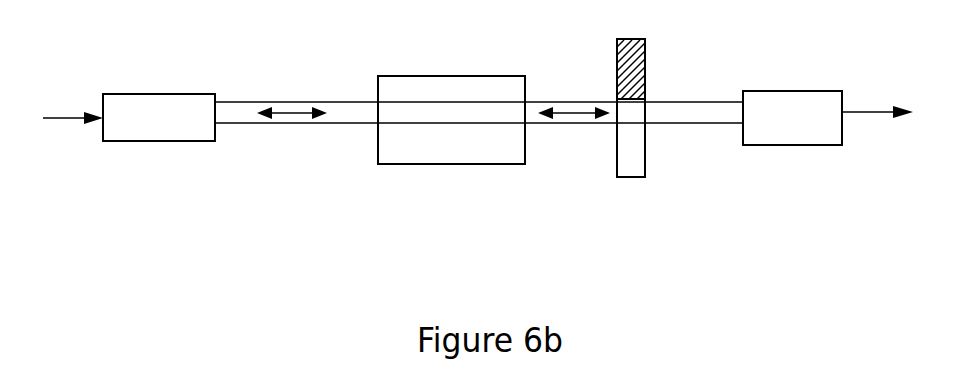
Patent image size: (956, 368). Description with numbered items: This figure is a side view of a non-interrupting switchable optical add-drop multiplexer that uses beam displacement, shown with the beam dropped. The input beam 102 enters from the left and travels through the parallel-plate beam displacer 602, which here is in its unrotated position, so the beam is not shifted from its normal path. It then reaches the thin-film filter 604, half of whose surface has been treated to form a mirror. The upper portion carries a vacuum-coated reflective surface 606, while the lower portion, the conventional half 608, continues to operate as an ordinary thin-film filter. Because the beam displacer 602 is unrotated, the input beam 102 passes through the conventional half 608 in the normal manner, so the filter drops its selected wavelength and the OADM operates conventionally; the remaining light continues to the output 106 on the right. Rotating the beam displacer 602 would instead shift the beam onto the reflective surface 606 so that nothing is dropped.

The input beam 102 is at (73, 105).
The output optical signal 106 is at (877, 98).
The parallel-plate beam displacer 602 is at (451, 137).
The thin-film filter 604 is at (626, 122).
The reflective surface 606 is at (645, 80).
The conventional half of filter 608 is at (645, 143).